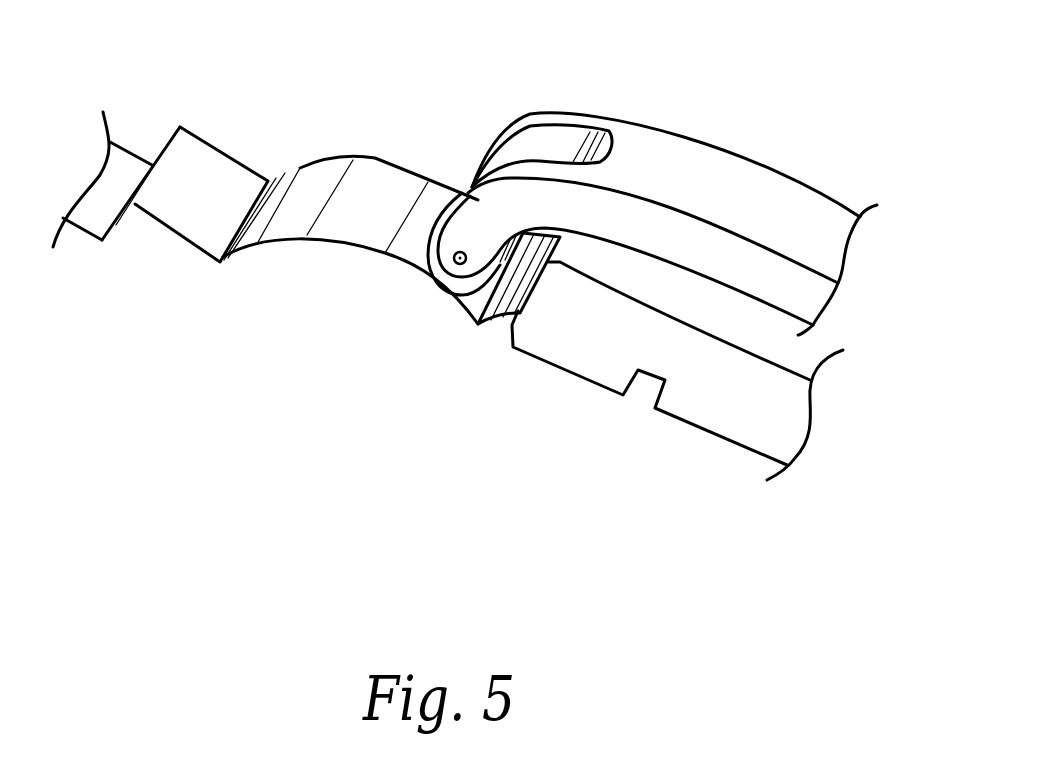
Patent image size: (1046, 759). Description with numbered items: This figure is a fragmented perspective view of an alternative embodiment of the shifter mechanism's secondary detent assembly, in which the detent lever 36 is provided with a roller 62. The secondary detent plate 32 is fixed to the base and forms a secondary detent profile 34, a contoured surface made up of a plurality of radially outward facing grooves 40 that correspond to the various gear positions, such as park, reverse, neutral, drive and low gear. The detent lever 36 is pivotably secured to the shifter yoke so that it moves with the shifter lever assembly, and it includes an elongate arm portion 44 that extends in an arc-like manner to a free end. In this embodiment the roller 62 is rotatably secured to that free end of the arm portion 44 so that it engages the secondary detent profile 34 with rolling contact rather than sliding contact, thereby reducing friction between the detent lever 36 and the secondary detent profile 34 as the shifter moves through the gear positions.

The secondary detent plate 32 is at (350, 158).
The secondary detent profile 34 is at (375, 203).
The detent lever 36 is at (810, 190).
The grooves 40 is at (197, 218).
The arm portion 44 is at (723, 175).
The roller 62 is at (450, 273).